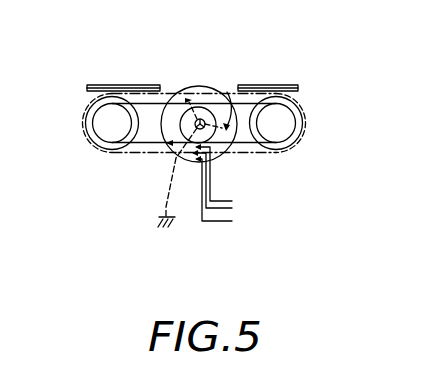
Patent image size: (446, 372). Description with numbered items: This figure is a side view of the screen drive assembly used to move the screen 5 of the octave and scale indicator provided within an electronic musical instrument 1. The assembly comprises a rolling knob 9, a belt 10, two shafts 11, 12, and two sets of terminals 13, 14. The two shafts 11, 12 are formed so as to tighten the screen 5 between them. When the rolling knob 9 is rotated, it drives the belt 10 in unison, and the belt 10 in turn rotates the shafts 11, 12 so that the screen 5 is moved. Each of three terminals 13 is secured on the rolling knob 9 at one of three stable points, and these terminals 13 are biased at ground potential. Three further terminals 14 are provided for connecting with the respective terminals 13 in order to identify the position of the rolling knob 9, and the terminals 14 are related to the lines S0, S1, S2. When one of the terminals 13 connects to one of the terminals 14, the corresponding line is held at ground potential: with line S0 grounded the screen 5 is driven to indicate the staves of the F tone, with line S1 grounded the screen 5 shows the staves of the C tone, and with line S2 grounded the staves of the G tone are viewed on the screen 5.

The electronic musical instrument 1 is at (91, 86).
The screen 5 is at (167, 93).
The rolling knob 9 is at (205, 85).
The belt 10 is at (143, 141).
The shaft 11 is at (293, 137).
The shaft 12 is at (97, 143).
The terminal 13 is at (227, 92).
The terminal 14 is at (205, 189).
The line S0 is at (185, 167).
The line S1 is at (222, 186).
The line S2 is at (224, 176).